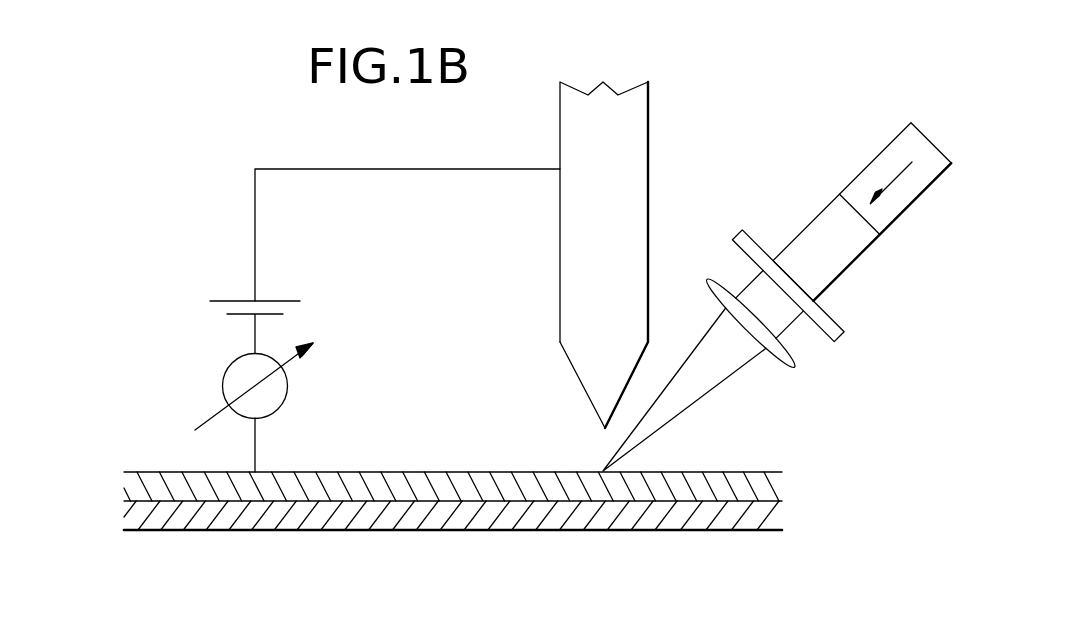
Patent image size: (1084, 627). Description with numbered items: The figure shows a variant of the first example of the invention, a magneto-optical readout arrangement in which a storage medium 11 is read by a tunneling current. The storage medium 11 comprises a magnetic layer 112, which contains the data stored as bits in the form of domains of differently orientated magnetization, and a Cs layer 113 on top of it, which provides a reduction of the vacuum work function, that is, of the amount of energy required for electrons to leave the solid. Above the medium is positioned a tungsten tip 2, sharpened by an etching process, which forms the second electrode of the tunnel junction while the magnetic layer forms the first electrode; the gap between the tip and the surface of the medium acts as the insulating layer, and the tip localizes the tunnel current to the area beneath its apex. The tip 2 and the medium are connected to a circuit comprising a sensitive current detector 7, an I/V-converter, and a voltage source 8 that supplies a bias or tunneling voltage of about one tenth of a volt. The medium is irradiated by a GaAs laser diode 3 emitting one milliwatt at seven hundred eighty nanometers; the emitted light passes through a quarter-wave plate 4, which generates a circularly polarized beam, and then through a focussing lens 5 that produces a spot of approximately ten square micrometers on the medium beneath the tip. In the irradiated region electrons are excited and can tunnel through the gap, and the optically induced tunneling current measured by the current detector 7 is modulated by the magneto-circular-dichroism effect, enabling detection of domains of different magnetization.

The tungsten tip 2 is at (662, 155).
The GaAs laser diode 3 is at (862, 172).
The λ/4 plate 4 is at (831, 316).
The focussing lens 5 is at (790, 350).
The current detector (I/V-converter) 7 is at (222, 380).
The voltage source 8 is at (228, 300).
The storage medium 11 is at (411, 485).
The magnetic layer 112 is at (388, 527).
The Cs layer 113 is at (322, 477).